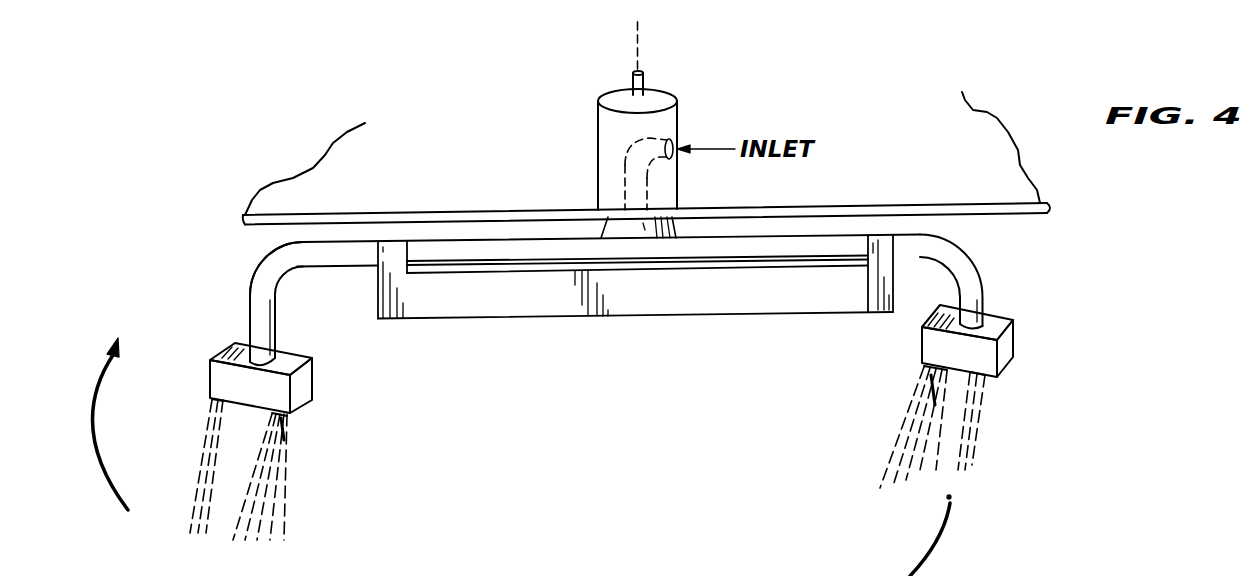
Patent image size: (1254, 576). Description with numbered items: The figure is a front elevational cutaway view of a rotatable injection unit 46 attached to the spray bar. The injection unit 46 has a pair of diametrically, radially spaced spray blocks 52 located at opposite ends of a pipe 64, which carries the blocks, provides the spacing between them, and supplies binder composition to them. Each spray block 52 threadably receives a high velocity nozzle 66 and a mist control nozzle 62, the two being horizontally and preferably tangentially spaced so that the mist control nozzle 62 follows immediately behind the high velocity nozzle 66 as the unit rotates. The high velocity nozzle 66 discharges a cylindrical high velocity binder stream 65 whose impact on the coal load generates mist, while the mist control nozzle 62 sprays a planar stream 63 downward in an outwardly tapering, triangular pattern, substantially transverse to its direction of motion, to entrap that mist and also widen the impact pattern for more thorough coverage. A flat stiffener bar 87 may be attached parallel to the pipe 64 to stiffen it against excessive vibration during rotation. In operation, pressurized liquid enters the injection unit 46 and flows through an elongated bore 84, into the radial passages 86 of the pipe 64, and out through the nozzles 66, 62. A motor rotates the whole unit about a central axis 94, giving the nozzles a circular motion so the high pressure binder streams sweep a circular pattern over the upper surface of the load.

The rotatable injection unit 46 is at (437, 502).
The spray block 52 is at (200, 364).
The mist control nozzle 62 is at (300, 423).
The planar stream 63 is at (283, 510).
The pipe 64 is at (248, 312).
The high velocity binder stream 65 is at (200, 495).
The high velocity nozzle 66 is at (198, 404).
The elongated bore 84 is at (627, 165).
The radial passage 86 is at (258, 266).
The flat stiffener bar 87 is at (447, 302).
The central axis 94 is at (640, 58).